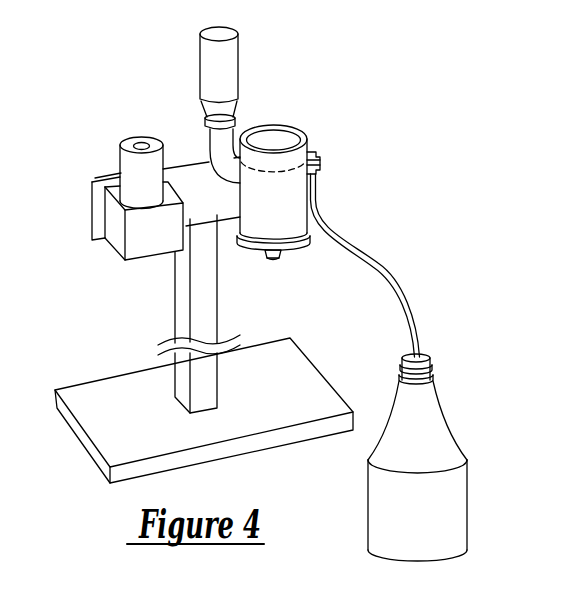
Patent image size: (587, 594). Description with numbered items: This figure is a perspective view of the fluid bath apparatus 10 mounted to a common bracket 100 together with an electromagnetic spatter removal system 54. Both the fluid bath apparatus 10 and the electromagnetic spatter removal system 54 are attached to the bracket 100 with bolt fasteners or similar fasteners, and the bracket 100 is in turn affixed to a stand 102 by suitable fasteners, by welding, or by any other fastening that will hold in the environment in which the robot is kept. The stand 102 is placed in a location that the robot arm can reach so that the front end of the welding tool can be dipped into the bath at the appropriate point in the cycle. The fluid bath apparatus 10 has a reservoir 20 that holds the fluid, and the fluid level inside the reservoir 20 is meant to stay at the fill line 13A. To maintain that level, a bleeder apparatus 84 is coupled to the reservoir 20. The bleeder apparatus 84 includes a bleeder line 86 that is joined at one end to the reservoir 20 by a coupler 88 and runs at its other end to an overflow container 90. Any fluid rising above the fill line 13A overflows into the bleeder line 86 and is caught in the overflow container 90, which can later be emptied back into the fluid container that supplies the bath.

The fluid bath apparatus 10 is at (251, 110).
The fill line 13A is at (281, 172).
The reservoir 20 is at (297, 250).
The electromagnetic spatter removal system 54 is at (100, 150).
The bleeder apparatus 84 is at (453, 364).
The bleeder line 86 is at (376, 255).
The coupler 88 is at (322, 163).
The overflow container 90 is at (446, 417).
The bracket 100 is at (195, 180).
The stand 102 is at (230, 300).